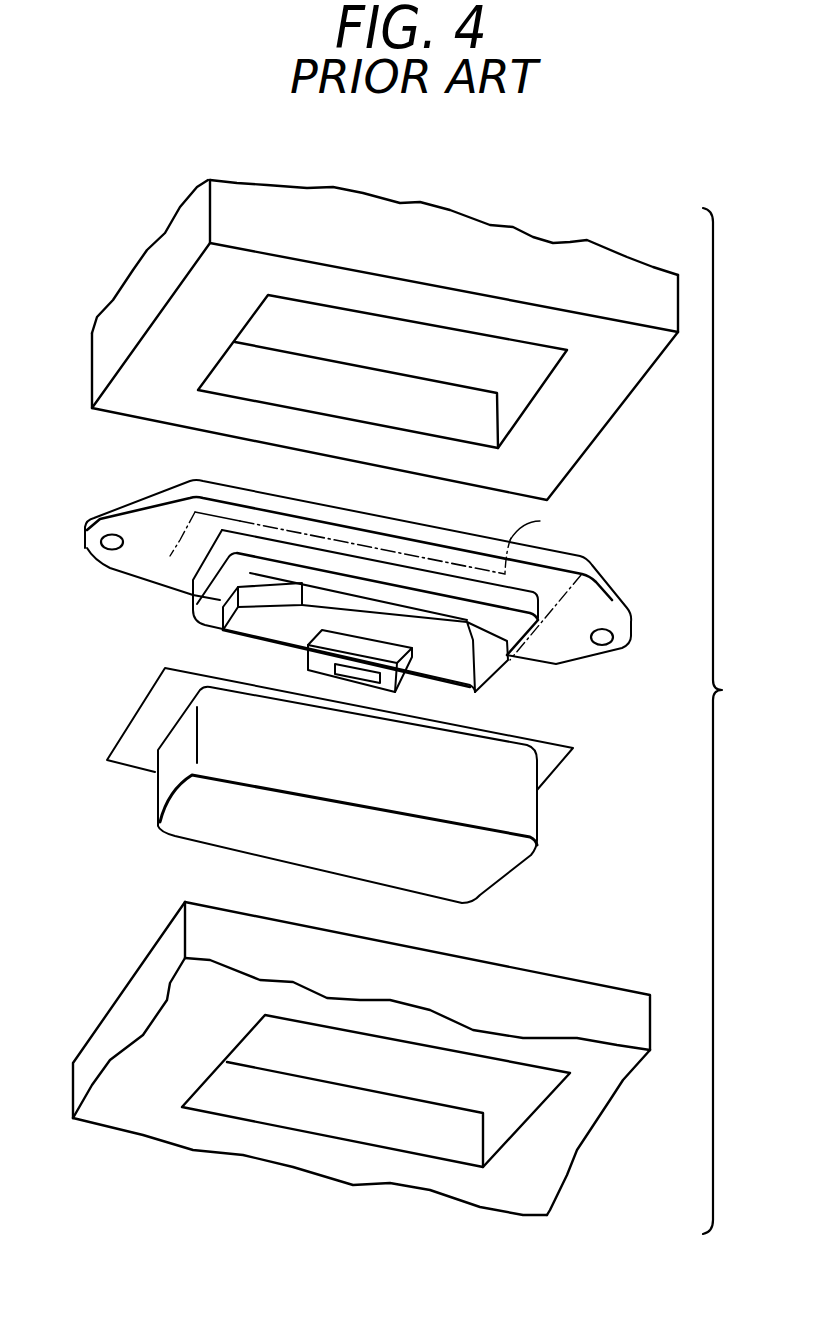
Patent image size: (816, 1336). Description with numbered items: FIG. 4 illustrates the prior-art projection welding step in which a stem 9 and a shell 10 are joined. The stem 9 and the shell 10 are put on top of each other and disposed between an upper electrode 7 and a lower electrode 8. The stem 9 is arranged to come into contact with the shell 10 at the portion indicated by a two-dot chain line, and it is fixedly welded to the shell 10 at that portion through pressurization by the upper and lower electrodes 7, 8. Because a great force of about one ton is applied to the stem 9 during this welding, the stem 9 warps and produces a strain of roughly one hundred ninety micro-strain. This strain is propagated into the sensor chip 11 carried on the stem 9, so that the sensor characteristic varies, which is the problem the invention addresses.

The upper electrode 7 is at (133, 410).
The lower electrode 8 is at (135, 990).
The stem 9 is at (613, 583).
The shell 10 is at (573, 748).
The sensor chip 11 is at (407, 683).